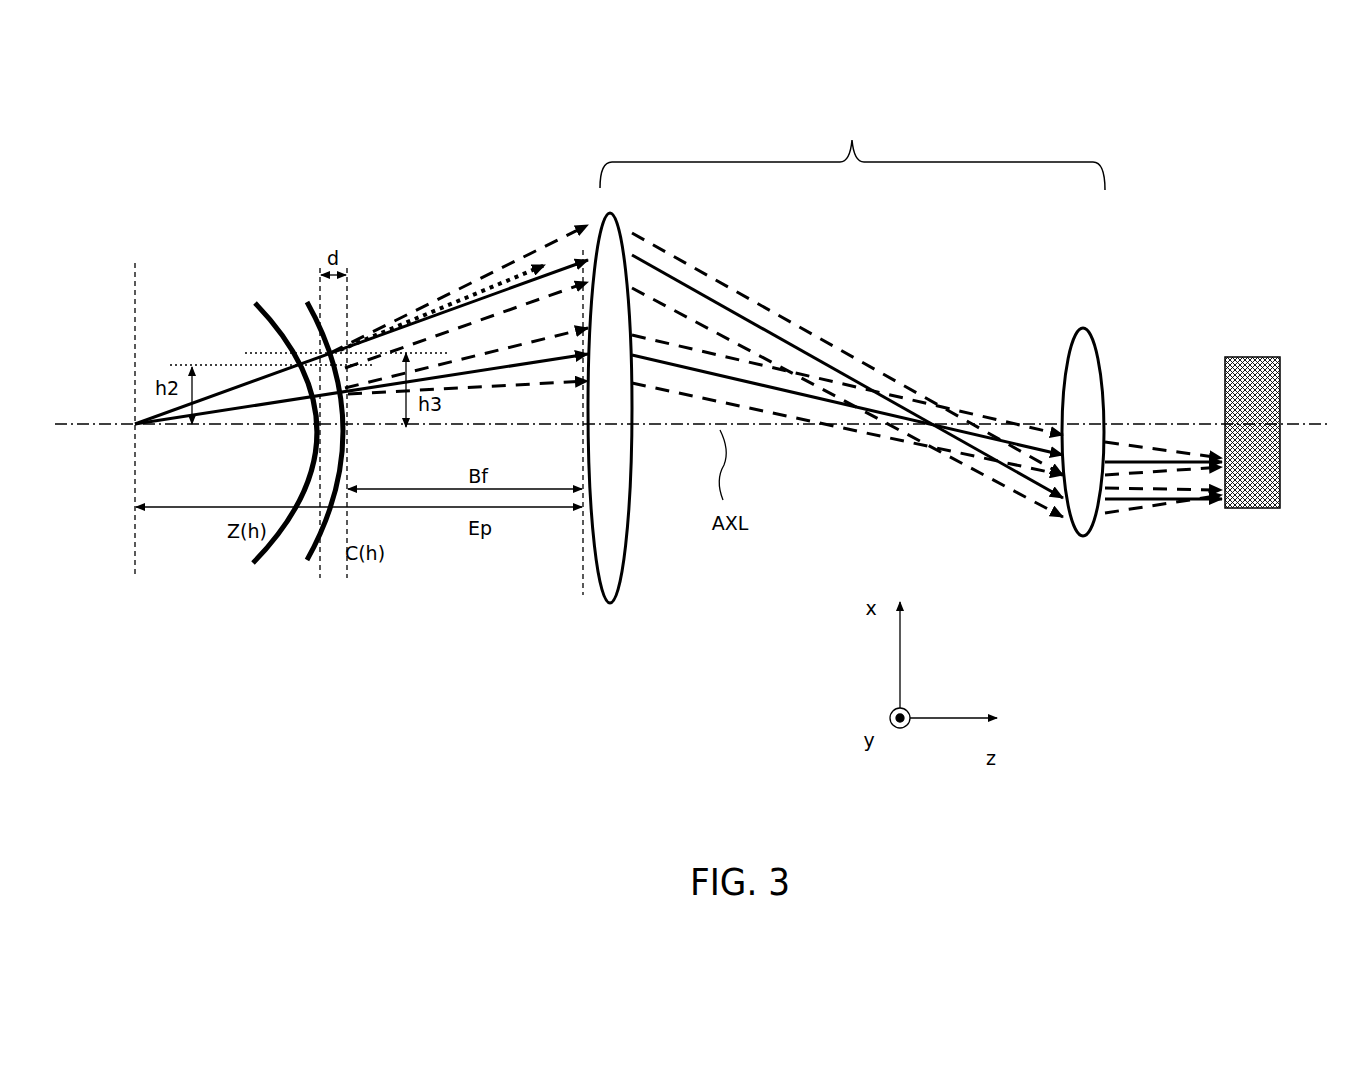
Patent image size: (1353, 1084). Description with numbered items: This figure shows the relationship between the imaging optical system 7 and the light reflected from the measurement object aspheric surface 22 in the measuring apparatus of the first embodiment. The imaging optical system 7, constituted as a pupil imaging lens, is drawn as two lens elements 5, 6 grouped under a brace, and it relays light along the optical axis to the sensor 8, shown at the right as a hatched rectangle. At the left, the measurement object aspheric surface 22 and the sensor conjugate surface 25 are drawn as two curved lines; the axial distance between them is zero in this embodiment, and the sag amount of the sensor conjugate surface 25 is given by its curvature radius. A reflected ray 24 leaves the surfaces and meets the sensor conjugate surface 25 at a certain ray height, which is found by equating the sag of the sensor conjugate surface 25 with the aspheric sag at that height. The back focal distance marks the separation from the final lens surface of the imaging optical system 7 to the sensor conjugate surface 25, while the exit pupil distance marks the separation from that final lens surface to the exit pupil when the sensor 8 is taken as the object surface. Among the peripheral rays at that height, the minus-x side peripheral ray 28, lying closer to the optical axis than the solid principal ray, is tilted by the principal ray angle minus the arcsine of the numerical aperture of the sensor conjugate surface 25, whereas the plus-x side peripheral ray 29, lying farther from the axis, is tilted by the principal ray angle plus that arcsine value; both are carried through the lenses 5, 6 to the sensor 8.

The first lens 5 is at (622, 228).
The second lens 6 is at (1098, 350).
The imaging optical system 7 is at (852, 160).
The sensor 8 is at (1240, 366).
The measurement object aspheric surface 22 is at (268, 552).
The reflected ray 24 is at (474, 292).
The sensor conjugate surface 25 is at (313, 549).
The −x side peripheral ray 28 is at (492, 308).
The +x side peripheral ray 29 is at (530, 252).